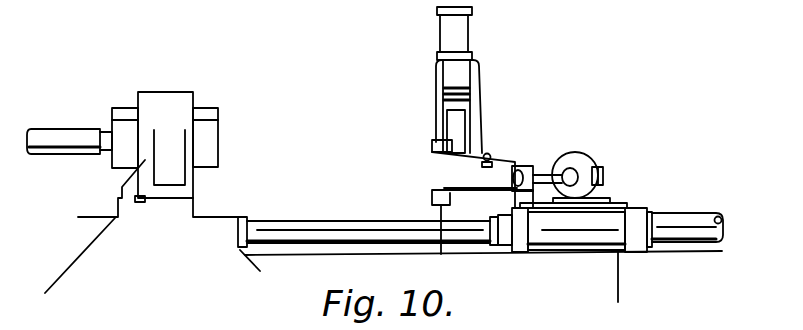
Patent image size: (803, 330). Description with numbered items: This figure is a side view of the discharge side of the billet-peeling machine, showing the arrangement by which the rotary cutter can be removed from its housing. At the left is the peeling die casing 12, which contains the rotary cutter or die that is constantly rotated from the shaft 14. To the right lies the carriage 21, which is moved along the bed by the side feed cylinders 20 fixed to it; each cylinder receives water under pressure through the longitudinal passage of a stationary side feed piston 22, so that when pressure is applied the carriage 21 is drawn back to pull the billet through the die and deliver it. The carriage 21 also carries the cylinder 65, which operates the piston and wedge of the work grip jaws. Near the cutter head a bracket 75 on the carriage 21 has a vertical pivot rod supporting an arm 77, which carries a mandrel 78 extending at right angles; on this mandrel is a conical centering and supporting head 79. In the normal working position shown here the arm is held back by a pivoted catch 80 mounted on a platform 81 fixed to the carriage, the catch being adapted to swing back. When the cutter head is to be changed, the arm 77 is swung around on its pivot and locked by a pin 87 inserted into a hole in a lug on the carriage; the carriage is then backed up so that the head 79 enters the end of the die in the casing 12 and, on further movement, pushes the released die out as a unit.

The peeling die casing 12 is at (162, 97).
The shaft 14 is at (52, 135).
The cylinder 20 is at (698, 235).
The carriage 21 is at (612, 205).
The side feed piston 22 is at (562, 233).
The cylinder 65 is at (462, 30).
The bracket 75 is at (433, 143).
The arm 77 is at (478, 178).
The mandrel 78 is at (543, 173).
The conical centering and supporting head 79 is at (578, 162).
The catch 80 is at (600, 170).
The platform 81 is at (605, 198).
The pin 87 is at (488, 153).